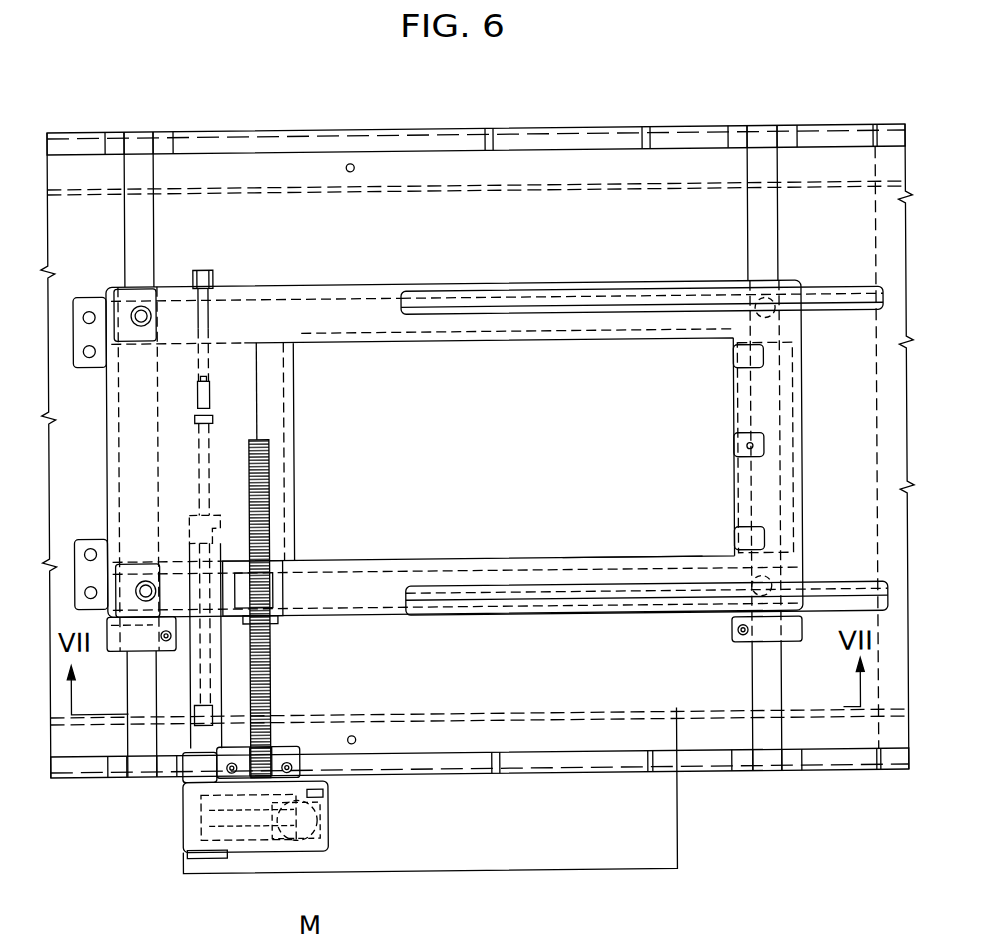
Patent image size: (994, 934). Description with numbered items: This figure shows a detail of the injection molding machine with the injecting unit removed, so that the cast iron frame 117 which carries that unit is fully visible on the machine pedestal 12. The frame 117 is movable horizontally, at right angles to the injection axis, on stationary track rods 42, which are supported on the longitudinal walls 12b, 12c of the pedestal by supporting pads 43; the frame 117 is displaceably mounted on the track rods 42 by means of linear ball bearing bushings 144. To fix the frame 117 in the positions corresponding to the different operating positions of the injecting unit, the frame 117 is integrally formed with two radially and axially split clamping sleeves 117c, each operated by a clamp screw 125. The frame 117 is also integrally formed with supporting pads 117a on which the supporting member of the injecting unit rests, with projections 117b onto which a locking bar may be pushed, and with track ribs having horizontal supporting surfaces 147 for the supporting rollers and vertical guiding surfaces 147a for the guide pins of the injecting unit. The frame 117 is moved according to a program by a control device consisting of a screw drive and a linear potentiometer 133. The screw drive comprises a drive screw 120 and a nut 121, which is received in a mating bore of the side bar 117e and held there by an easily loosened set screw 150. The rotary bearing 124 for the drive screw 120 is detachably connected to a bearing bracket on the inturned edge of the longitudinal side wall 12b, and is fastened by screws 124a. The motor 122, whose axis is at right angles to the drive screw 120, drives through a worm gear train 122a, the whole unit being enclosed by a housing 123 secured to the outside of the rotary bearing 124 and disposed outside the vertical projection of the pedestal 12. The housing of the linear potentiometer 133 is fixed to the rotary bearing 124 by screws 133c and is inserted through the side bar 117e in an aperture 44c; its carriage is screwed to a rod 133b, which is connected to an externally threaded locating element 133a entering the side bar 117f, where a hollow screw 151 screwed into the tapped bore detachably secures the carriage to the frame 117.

The machine pedestal 12 is at (224, 134).
The longitudinal side wall 12b is at (464, 778).
The longitudinal wall 12c is at (305, 150).
The track rods 42 is at (141, 746).
The supporting pads 43 is at (733, 134).
The aperture 44c is at (184, 562).
The cast iron frame 117 is at (348, 280).
The supporting pads 117a is at (77, 306).
The projections 117b is at (736, 449).
The clamping sleeves 117c is at (115, 641).
The side bar 117e is at (396, 609).
The side bar 117f is at (379, 324).
The drive screw 120 is at (268, 655).
The nut 121 is at (282, 573).
The motor 122 is at (278, 858).
The worm gear train 122a is at (317, 800).
The housing 123 is at (327, 818).
The rotary bearing 124 is at (274, 751).
The screws 124a is at (350, 746).
The clamp screw 125 is at (202, 695).
The linear potentiometer 133 is at (162, 658).
The locating element 133a is at (215, 382).
The rod 133b is at (202, 440).
The screws 133c is at (240, 715).
The linear ball bearing bushings 144 is at (159, 302).
The horizontal supporting surfaces 147 is at (622, 608).
The vertical guiding surfaces 147a is at (628, 569).
The set screw 150 is at (268, 624).
The hollow screw 151 is at (204, 274).